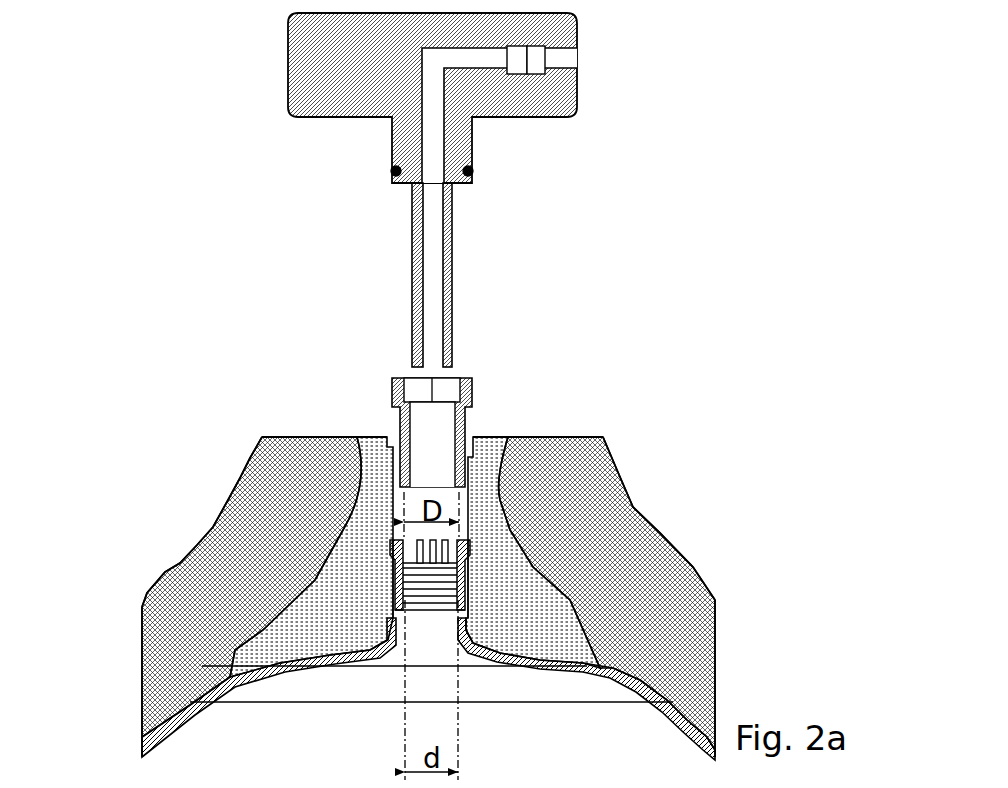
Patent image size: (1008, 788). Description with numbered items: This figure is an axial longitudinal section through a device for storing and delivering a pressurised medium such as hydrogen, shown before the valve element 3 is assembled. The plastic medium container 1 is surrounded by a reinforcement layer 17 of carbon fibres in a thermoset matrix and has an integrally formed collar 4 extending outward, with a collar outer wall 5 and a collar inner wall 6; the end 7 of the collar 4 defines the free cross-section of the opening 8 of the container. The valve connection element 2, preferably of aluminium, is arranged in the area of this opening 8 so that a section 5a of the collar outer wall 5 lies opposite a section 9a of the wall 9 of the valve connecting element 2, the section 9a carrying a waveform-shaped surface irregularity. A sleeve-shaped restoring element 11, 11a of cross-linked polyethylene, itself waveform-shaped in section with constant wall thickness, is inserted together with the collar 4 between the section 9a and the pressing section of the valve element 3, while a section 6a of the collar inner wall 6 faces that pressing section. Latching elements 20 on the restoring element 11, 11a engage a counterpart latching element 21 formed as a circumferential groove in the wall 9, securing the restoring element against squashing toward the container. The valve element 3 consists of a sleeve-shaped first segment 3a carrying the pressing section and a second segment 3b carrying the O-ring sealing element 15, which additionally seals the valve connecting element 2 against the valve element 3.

The medium container 1 is at (167, 713).
The valve connection element 2 is at (563, 633).
The valve element 3 is at (312, 85).
The first segment 3a is at (472, 378).
The second segment 3b is at (483, 150).
The collar 4 is at (630, 510).
The collar outer wall 5 is at (690, 553).
The section of the collar outer wall 5a is at (248, 478).
The collar inner wall 6 is at (480, 612).
The section of the collar inner wall 6a is at (290, 445).
The end of the collar 7 is at (617, 478).
The opening 8 is at (432, 578).
The wall of the valve connecting element 9 is at (398, 498).
The section of the wall 9a is at (388, 573).
The restoring element 11 is at (655, 540).
The restoring element 11a is at (655, 540).
The sealing element 15 is at (478, 172).
The reinforcement layer 17 is at (165, 572).
The latching element 20 is at (475, 543).
The counterpart latching element 21 is at (490, 545).